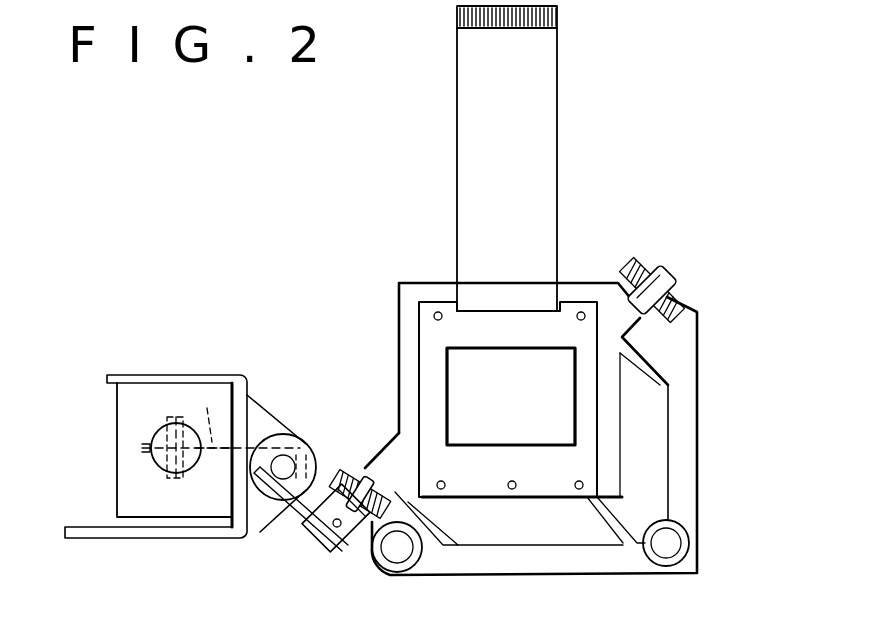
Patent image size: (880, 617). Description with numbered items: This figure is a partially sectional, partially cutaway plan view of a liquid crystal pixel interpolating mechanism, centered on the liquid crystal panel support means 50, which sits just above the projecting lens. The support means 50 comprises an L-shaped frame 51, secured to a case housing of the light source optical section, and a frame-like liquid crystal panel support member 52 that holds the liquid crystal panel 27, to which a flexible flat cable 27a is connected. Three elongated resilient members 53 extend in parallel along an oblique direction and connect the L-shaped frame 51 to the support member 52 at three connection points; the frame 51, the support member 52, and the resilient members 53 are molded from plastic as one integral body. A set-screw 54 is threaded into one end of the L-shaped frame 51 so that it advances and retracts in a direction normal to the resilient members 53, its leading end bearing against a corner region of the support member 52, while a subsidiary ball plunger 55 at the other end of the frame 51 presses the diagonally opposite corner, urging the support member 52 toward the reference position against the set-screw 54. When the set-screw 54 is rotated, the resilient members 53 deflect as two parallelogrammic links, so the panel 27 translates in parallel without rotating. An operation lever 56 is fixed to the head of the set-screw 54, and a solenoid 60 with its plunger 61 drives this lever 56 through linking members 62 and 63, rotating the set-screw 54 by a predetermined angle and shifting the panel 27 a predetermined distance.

The liquid crystal panel 27 is at (432, 336).
The flexible flat cable 27a is at (550, 148).
The liquid crystal panel support means 50 is at (730, 398).
The L-shaped frame 51 is at (580, 568).
The liquid crystal panel support member 52 is at (406, 368).
The resilient members 53 is at (637, 372).
The set-screw 54 is at (345, 478).
The ball plunger 55 is at (667, 270).
The operation lever 56 is at (304, 510).
The solenoid 60 is at (150, 395).
The plunger 61 is at (158, 467).
The linking member 62 is at (211, 415).
The linking member 63 is at (274, 452).